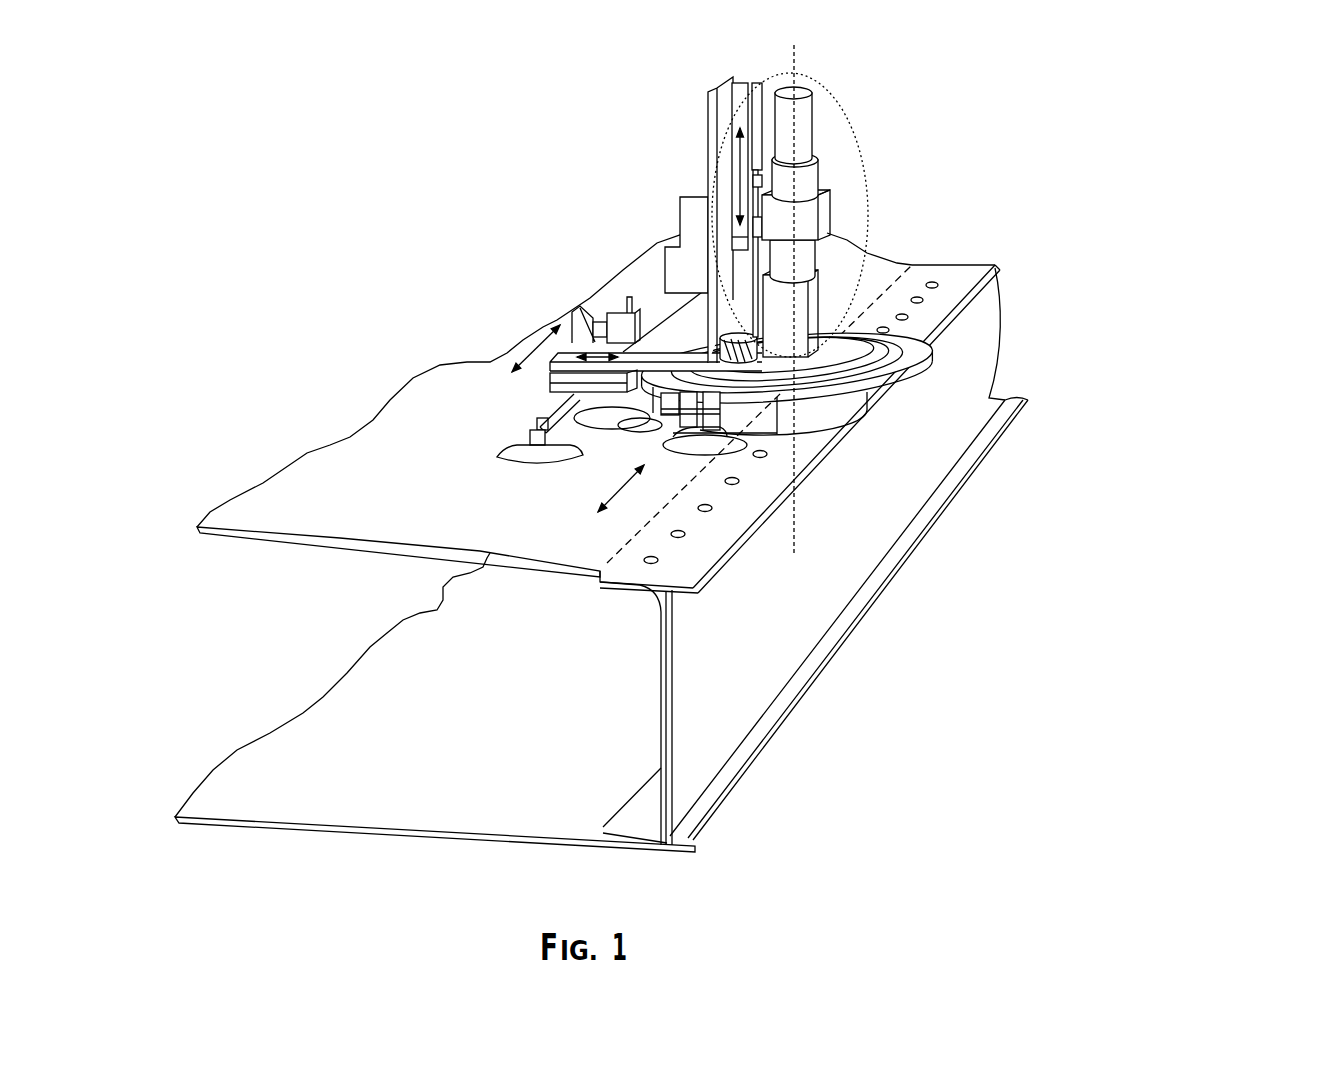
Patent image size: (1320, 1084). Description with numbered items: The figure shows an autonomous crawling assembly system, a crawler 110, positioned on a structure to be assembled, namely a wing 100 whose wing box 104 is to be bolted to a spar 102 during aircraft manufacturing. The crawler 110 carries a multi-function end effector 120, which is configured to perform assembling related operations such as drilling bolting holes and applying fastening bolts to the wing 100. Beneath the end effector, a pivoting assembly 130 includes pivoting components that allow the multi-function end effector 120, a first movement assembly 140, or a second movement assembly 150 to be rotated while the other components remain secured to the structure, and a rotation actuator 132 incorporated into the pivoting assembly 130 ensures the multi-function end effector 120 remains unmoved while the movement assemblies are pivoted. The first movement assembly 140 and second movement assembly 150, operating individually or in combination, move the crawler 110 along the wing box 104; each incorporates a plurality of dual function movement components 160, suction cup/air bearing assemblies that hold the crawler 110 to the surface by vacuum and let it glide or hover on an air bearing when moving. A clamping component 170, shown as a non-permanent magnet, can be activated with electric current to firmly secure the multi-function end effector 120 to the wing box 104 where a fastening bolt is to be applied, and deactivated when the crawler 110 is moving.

The wing 100 is at (282, 690).
The spar 102 is at (776, 620).
The wing box 104 is at (267, 514).
The crawler 110 is at (663, 97).
The multi-function end effector 120 is at (858, 150).
The pivoting assembly 130 is at (898, 352).
The rotation actuator 132 is at (686, 271).
The first movement assembly 140 is at (575, 386).
The second movement assembly 150 is at (735, 388).
The dual function movement component 160 is at (508, 456).
The clamping component 170 is at (870, 408).